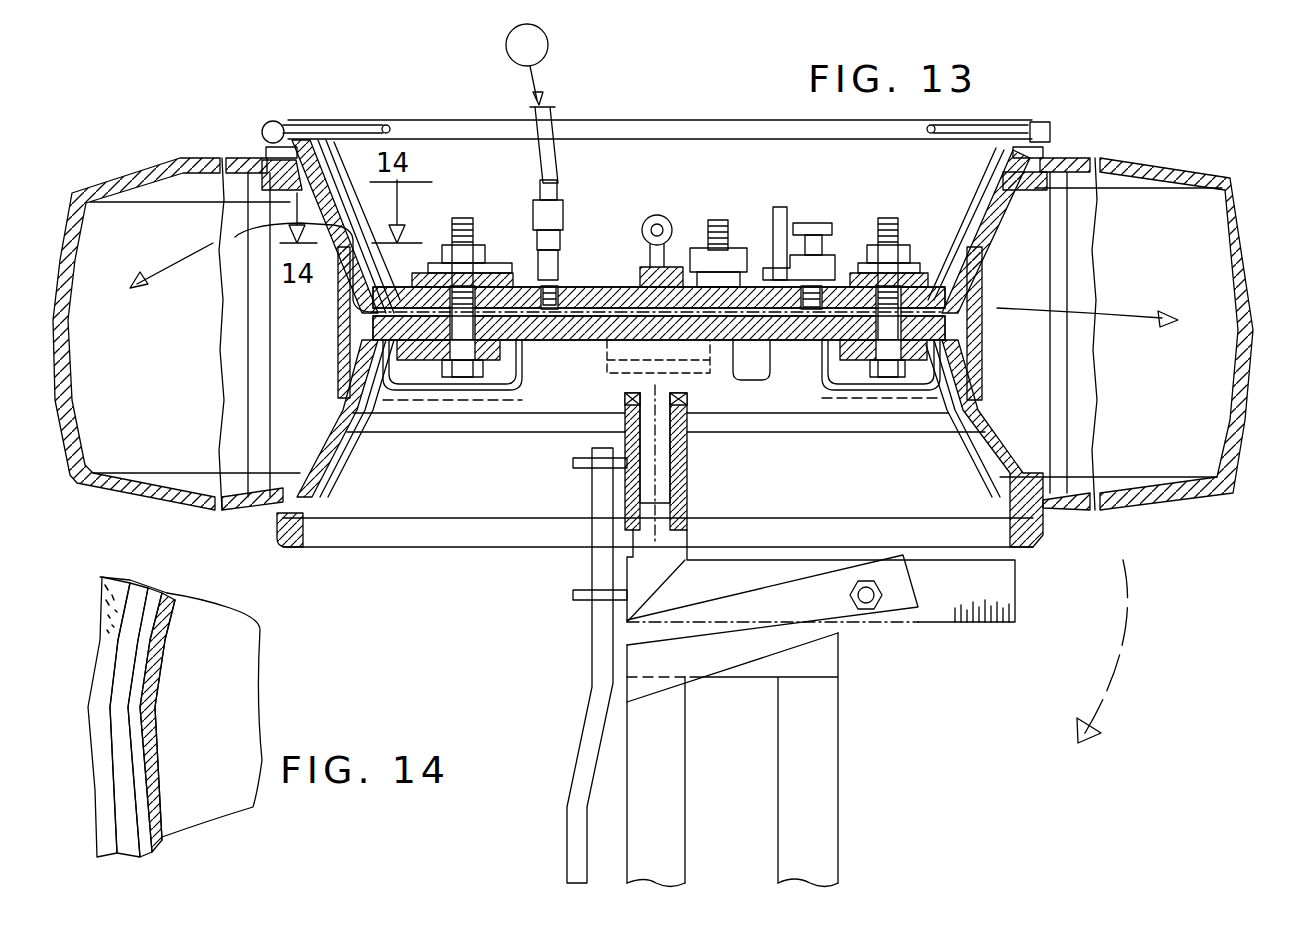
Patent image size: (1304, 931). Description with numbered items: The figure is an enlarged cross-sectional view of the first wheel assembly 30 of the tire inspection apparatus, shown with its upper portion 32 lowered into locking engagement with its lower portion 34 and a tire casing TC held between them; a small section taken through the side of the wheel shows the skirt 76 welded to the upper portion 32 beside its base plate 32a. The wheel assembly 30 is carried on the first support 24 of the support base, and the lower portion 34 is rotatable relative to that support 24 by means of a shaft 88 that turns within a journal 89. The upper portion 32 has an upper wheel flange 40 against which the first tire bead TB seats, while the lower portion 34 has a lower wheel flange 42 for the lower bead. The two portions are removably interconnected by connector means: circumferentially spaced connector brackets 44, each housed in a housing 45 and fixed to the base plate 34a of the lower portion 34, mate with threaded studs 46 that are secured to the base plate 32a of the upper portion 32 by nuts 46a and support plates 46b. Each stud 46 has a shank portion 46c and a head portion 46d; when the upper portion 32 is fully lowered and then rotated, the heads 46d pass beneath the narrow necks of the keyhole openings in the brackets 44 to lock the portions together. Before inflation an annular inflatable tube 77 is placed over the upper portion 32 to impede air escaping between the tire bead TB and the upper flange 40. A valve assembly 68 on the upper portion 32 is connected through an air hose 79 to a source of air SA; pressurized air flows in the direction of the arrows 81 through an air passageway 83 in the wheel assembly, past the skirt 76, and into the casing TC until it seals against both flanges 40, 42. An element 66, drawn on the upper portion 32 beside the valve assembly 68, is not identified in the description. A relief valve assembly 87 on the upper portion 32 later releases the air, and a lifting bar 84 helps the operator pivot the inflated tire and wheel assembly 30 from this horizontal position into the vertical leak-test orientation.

In FIG. 13, the first support 24 is at (840, 722).
In FIG. 13, the first wheel assembly 30 is at (665, 102).
In FIG. 13, the upper portion of the wheel assembly 32 is at (491, 115).
In FIG. 14, the upper portion of the wheel assembly 32 is at (150, 733).
In FIG. 13, the base plate of the first wheel portion 32a is at (603, 300).
In FIG. 14, the base plate of the first wheel portion 32a is at (240, 670).
In FIG. 13, the lower portion of the wheel assembly 34 is at (470, 558).
In FIG. 13, the base plate of the second wheel portion 34a is at (749, 330).
In FIG. 13, the upper wheel flange 40 is at (264, 124).
In FIG. 13, the lower wheel flange 42 is at (1003, 493).
In FIG. 13, the connector brackets 44 is at (412, 355).
In FIG. 13, the housing 45 is at (516, 388).
In FIG. 13, the threaded studs 46 is at (461, 216).
In FIG. 13, the nuts 46a is at (444, 247).
In FIG. 13, the support plates 46b is at (508, 272).
In FIG. 13, the shank portion 46c is at (450, 328).
In FIG. 13, the head portion 46d is at (466, 380).
In FIG. 13, the eye bolt 66 is at (652, 214).
In FIG. 13, the valve assembly 68 is at (560, 255).
In FIG. 13, the skirt 76 is at (337, 379).
In FIG. 14, the skirt 76 is at (117, 683).
In FIG. 13, the inflatable tube 77 is at (265, 151).
In FIG. 13, the air hose 79 is at (557, 128).
In FIG. 13, the arrows 81 is at (160, 271).
In FIG. 13, the air passageway 83 is at (587, 318).
In FIG. 13, the lifting bar 84 is at (592, 656).
In FIG. 13, the relief valve assembly 87 is at (800, 222).
In FIG. 13, the shaft 88 is at (660, 477).
In FIG. 13, the journal 89 is at (688, 503).
In FIG. 13, the source of air SA is at (548, 45).
In FIG. 13, the first tire bead TB is at (300, 168).
In FIG. 13, the tire casing TC is at (114, 178).
In FIG. 14, the tire casing TC is at (117, 590).